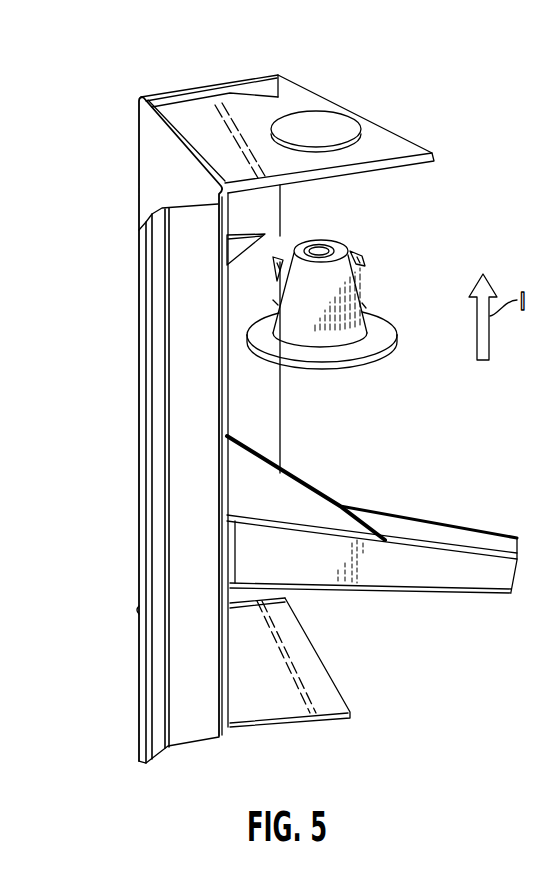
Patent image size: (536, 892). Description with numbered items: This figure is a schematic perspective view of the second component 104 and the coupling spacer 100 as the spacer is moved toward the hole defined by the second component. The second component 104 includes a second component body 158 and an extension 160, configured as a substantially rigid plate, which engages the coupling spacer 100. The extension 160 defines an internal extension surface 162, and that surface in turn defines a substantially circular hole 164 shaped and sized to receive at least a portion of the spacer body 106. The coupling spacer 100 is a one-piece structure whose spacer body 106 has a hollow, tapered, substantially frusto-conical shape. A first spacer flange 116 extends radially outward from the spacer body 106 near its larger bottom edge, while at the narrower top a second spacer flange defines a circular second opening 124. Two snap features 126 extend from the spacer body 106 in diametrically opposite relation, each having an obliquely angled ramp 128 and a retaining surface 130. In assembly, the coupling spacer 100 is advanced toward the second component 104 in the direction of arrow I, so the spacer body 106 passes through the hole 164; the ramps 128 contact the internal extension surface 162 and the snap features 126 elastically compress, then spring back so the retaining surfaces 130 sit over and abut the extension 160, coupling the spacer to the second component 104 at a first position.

The coupling spacer 100 is at (314, 296).
The second component 104 is at (138, 520).
The spacer body 106 is at (366, 346).
The first spacer flange 116 is at (313, 352).
The second opening 124 is at (320, 251).
The snap feature 126 is at (271, 271).
The ramp 128 is at (273, 256).
The retaining surface 130 is at (272, 303).
The second component body 158 is at (156, 171).
The extension 160 is at (414, 150).
The internal extension surface 162 is at (293, 112).
The hole 164 is at (323, 132).